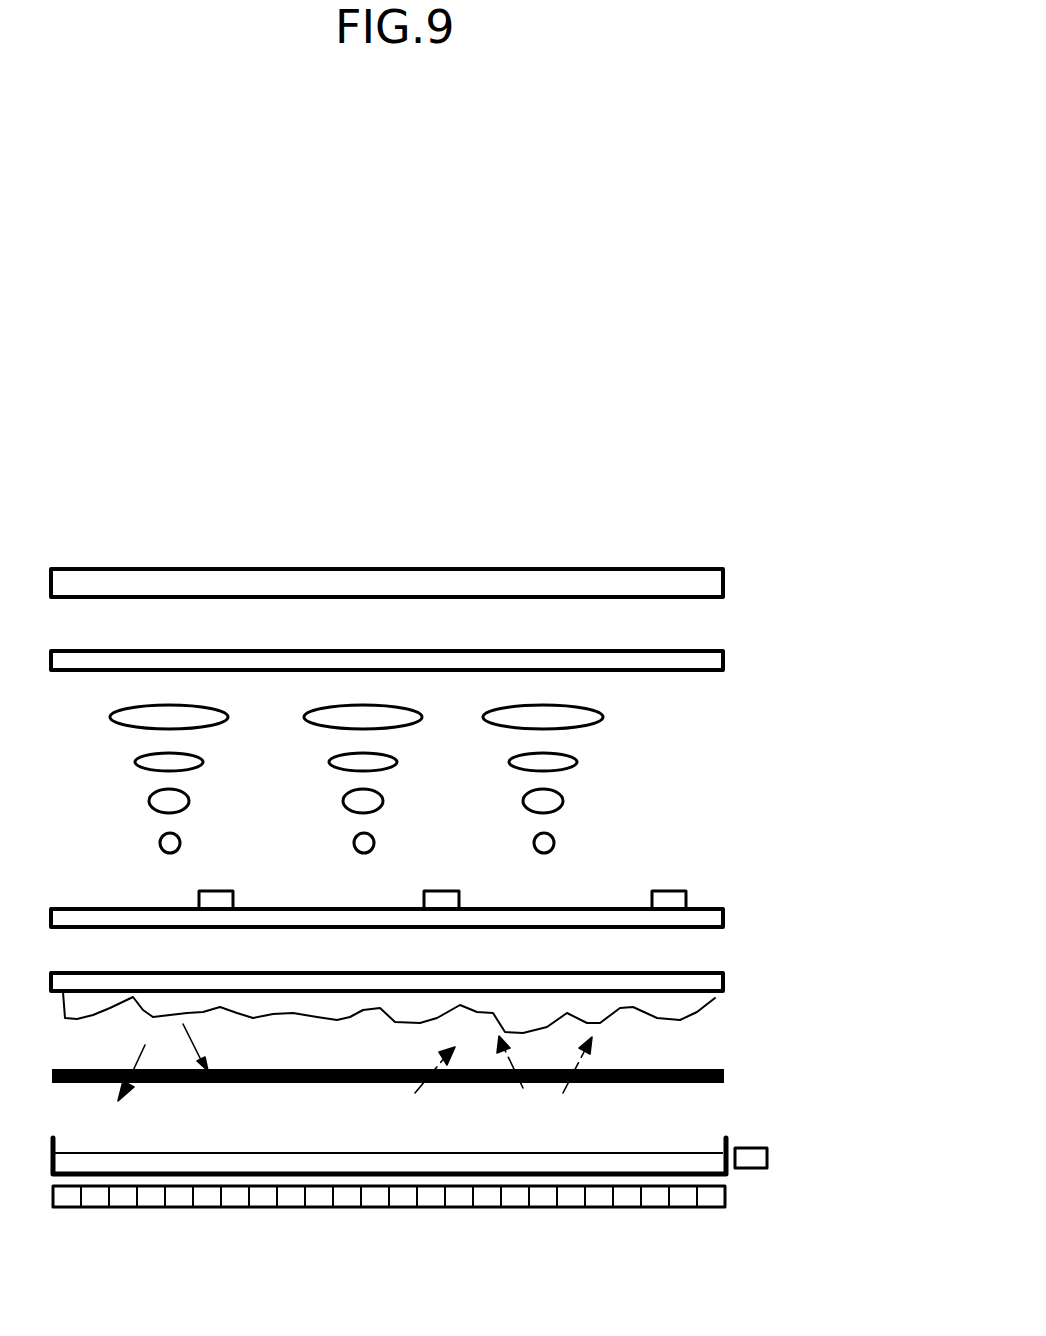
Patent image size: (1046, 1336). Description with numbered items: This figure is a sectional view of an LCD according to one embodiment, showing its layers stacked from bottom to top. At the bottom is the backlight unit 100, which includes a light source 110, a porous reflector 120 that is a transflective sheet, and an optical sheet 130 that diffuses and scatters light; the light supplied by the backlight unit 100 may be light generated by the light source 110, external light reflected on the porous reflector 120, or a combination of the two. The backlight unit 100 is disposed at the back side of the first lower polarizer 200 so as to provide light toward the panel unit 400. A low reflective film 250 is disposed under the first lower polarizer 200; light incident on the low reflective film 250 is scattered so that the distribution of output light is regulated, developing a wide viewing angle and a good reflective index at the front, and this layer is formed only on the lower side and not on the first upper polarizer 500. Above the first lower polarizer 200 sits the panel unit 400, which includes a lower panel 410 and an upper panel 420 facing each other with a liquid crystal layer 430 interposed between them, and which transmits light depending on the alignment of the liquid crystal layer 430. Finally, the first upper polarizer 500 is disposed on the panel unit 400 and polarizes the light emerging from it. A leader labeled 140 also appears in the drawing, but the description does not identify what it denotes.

The backlight unit 100 is at (883, 1233).
The light source 110 is at (752, 1158).
The porous reflector 120 is at (715, 1197).
The optical sheet 130 is at (724, 1073).
The reflective layer 140 is at (267, 1162).
The first lower polarizer 200 is at (710, 983).
The low reflective film 250 is at (697, 1003).
The panel unit 400 is at (882, 921).
The lower panel 410 is at (708, 920).
The upper panel 420 is at (705, 661).
The liquid crystal layer 430 is at (666, 747).
The first upper polarizer 500 is at (723, 578).